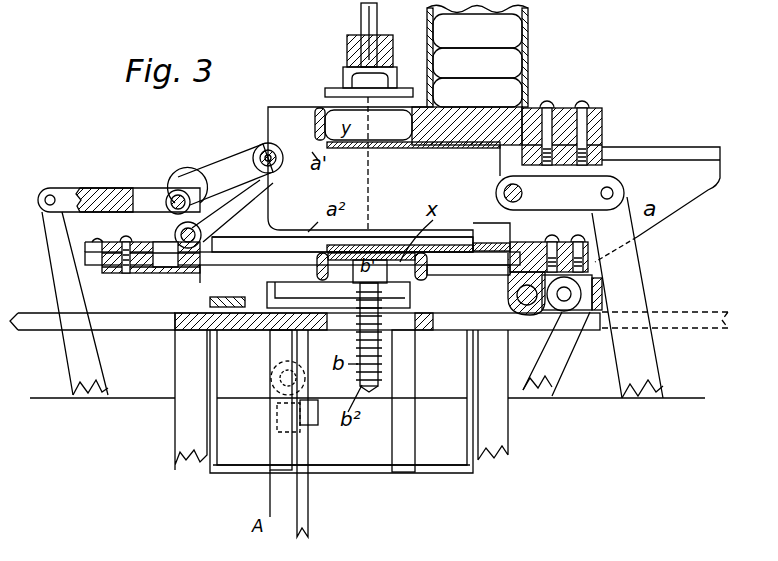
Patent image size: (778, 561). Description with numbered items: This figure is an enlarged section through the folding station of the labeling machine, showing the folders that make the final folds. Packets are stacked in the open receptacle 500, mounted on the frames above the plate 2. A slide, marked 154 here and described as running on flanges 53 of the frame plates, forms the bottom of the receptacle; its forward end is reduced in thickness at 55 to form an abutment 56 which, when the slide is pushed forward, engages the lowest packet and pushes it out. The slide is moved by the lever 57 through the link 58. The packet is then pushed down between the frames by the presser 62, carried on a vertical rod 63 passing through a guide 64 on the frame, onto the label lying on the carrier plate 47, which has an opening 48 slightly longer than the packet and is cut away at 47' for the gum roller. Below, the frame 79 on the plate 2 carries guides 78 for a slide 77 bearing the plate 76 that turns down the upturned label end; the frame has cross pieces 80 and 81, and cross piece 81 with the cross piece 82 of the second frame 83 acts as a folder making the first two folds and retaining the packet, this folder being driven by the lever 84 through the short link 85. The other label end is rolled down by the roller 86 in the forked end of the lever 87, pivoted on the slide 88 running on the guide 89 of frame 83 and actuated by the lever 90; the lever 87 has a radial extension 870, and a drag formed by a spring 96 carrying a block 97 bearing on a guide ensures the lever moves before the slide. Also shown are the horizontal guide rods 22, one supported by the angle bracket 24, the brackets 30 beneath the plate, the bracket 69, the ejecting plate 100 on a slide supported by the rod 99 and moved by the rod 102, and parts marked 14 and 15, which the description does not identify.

The vertical rod 63 is at (361, 18).
The guide 64 is at (347, 57).
The presser 62 is at (325, 92).
The open receptacle 500 is at (528, 68).
The abutment 56 is at (422, 147).
The reduced-thickness portion of slide 55 is at (388, 148).
The clamp block 154 is at (596, 133).
The flanges 53 is at (670, 149).
The link 58 is at (560, 193).
The lever 57 is at (627, 297).
The opening 48 is at (380, 255).
The horizontally disposed plate 47 is at (302, 269).
The plate 76 is at (478, 244).
The slide 77 is at (532, 249).
The guides 78 is at (495, 264).
The short link 85 is at (521, 297).
The cross piece 80 is at (602, 300).
The cut-away portion 47' is at (468, 275).
The cross piece 81 is at (427, 270).
The cross piece 82 is at (317, 270).
The ejecting plate 100 is at (338, 295).
The guide 89 is at (96, 188).
The lever 90 is at (75, 303).
The horizontal rods 22 is at (178, 184).
The angle bracket 24 is at (225, 174).
The roller 86 is at (272, 174).
The lever 87 is at (232, 211).
The radial extension 870 is at (175, 240).
The slide 88 is at (157, 273).
The spring 96 is at (135, 236).
The block 97 is at (90, 242).
The second frame 83 is at (191, 284).
The bracket 69 is at (218, 265).
The plate 2 is at (700, 303).
The frame 79 is at (452, 300).
The bracket 30 is at (342, 400).
The column 14 is at (410, 430).
The base plate 15 is at (240, 465).
The rod 102 is at (308, 494).
The rod 99 is at (300, 380).
The lever 84 is at (556, 354).